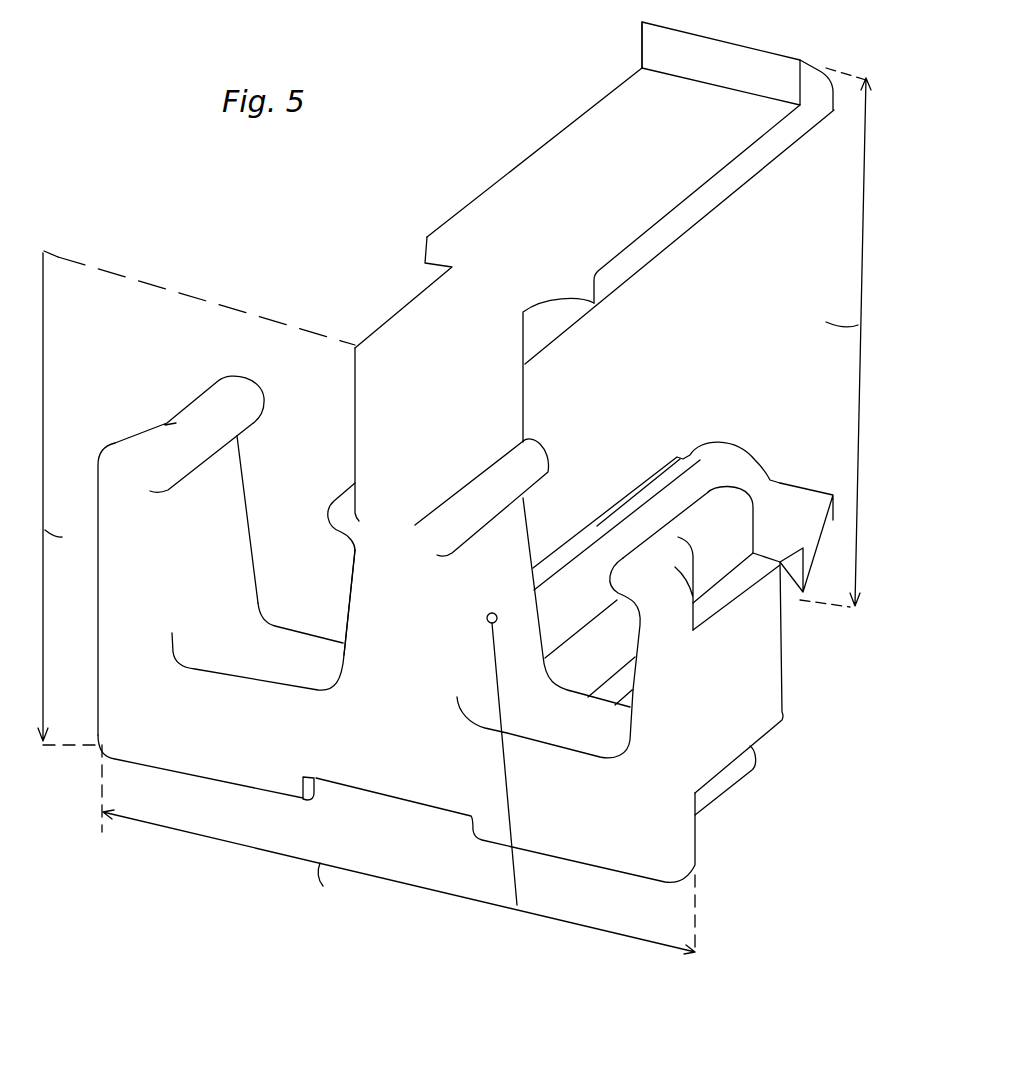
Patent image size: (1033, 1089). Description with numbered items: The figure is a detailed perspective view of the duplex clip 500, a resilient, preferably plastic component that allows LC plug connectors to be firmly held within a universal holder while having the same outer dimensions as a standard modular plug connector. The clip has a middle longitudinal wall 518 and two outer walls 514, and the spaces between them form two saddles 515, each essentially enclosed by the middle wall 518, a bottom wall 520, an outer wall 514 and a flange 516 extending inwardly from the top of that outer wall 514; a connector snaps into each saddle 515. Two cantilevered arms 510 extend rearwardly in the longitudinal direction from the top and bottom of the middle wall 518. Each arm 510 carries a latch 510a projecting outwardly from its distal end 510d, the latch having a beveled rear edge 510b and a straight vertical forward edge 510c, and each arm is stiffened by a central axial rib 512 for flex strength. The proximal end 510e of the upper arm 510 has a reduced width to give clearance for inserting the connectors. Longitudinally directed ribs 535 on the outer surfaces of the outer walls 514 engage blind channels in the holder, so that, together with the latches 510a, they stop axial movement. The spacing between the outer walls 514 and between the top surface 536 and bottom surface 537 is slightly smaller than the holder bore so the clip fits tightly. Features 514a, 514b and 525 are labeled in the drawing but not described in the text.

The duplex clip 500 is at (280, 214).
The cantilevered arm 510 is at (553, 162).
The latch 510a is at (727, 53).
The beveled rear edge 510b is at (828, 57).
The straight forward edge 510c is at (658, 50).
The distal end 510d is at (807, 155).
The proximal end 510e is at (401, 275).
The central axial rib 512 is at (558, 334).
The outer wall 514 is at (87, 475).
The leg front face 514a is at (116, 648).
The leg edge 514b is at (253, 463).
The saddle 515 is at (272, 538).
The flange 516 is at (250, 405).
The middle longitudinal wall 518 is at (372, 618).
The bottom wall 520 is at (302, 667).
The rounded tab 525 is at (343, 503).
The longitudinally directed rib 535 is at (770, 668).
The top surface 536 is at (412, 318).
The bottom surface 537 is at (253, 799).